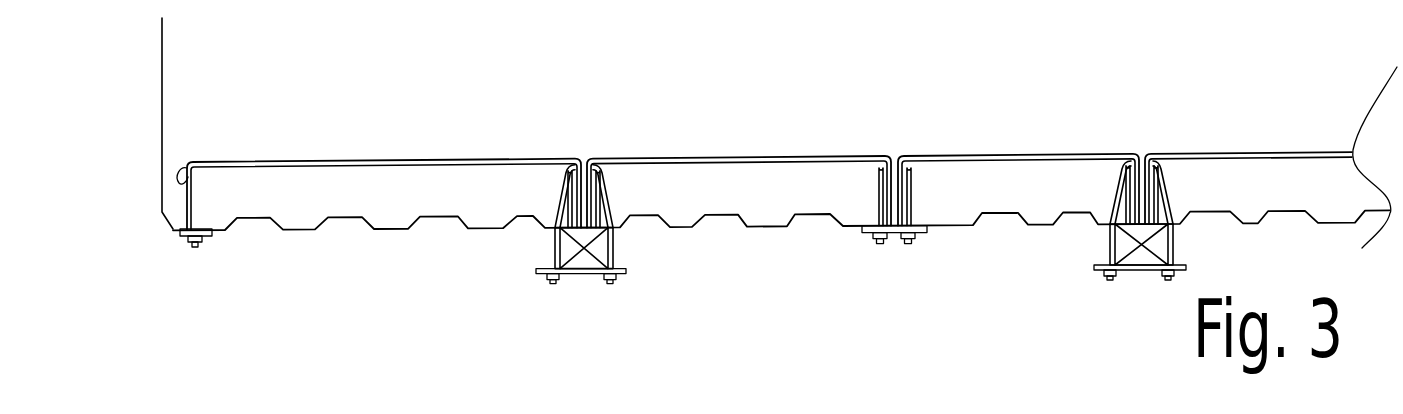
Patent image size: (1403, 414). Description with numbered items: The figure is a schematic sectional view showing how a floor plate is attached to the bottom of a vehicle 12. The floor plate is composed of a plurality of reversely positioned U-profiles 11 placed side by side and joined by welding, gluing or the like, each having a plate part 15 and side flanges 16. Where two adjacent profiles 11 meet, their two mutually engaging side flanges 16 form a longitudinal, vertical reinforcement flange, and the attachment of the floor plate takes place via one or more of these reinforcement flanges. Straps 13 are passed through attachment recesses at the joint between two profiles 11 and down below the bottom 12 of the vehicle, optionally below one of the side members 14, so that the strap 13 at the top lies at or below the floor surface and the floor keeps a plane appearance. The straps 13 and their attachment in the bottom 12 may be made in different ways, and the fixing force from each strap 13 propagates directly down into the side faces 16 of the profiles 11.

The U-profile 11 is at (398, 162).
The bottom of the vehicle 12 is at (295, 232).
The strap 13 is at (212, 236).
The side member 14 is at (582, 260).
The plate part 15 is at (502, 160).
The side flange 16 is at (575, 178).